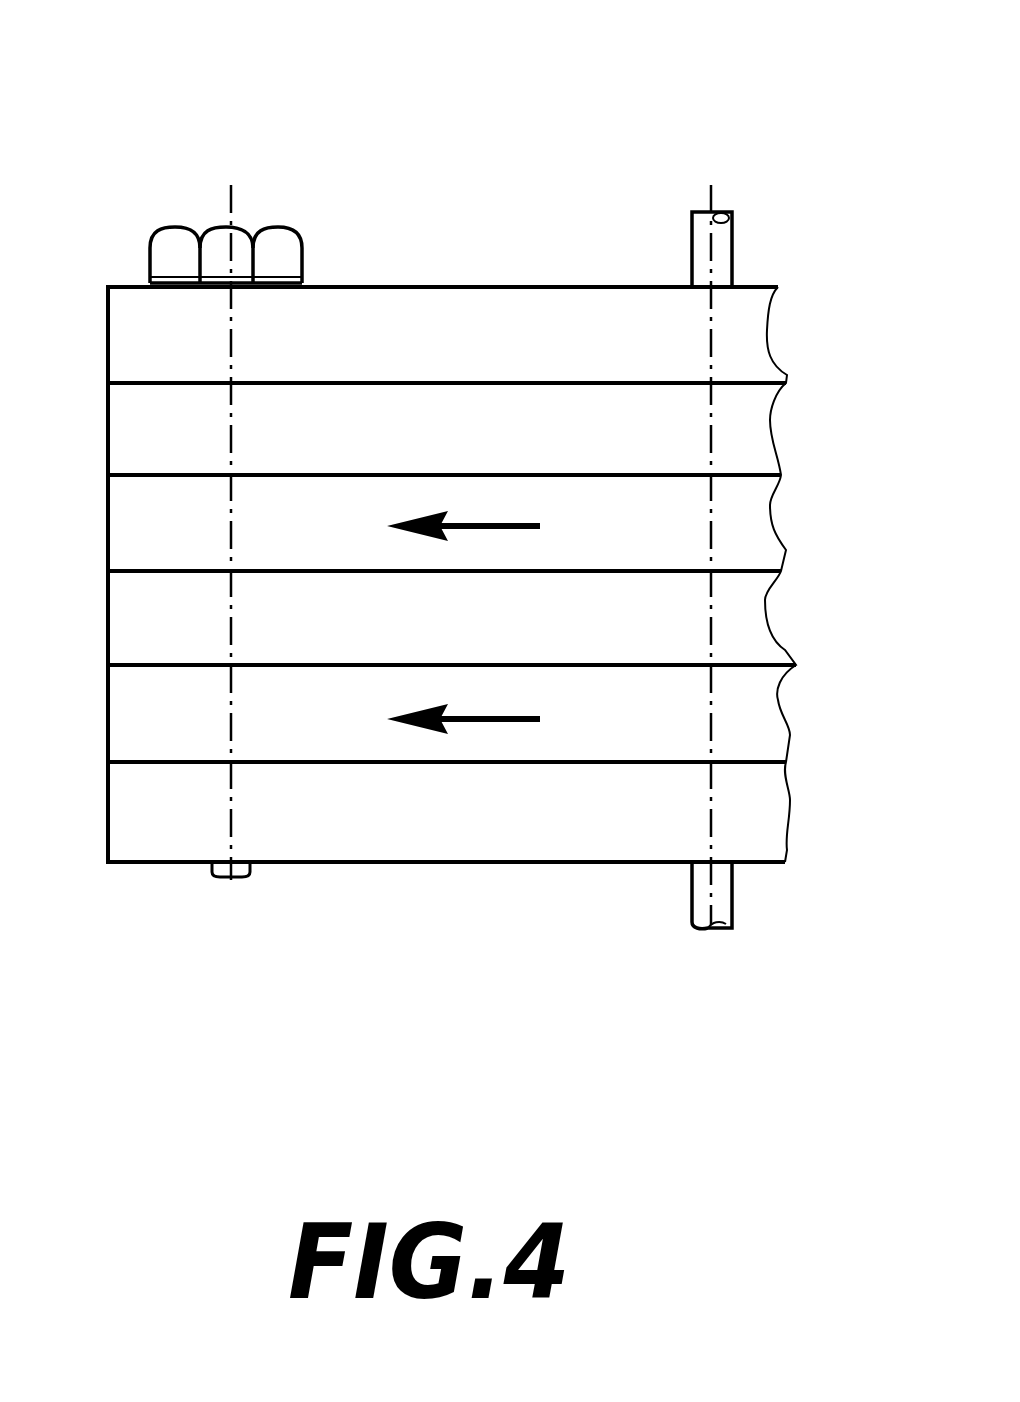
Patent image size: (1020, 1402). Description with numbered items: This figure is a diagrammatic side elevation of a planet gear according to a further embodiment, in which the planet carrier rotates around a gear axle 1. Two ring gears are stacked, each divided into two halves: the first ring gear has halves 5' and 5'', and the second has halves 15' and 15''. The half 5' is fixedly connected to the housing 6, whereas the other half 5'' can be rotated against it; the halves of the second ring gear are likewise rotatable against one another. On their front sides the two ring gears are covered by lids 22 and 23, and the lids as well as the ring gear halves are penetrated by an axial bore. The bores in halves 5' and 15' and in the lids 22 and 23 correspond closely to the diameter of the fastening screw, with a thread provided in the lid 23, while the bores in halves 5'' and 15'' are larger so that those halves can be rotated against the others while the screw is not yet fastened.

The gear axle 1 is at (712, 265).
The housing 6 is at (500, 256).
The lid 22 is at (357, 350).
The ring gear half 5' is at (440, 295).
The ring gear half 5'' is at (440, 343).
The ring gear half 15' is at (440, 843).
The ring gear half 15'' is at (440, 815).
The lid 23 is at (328, 822).